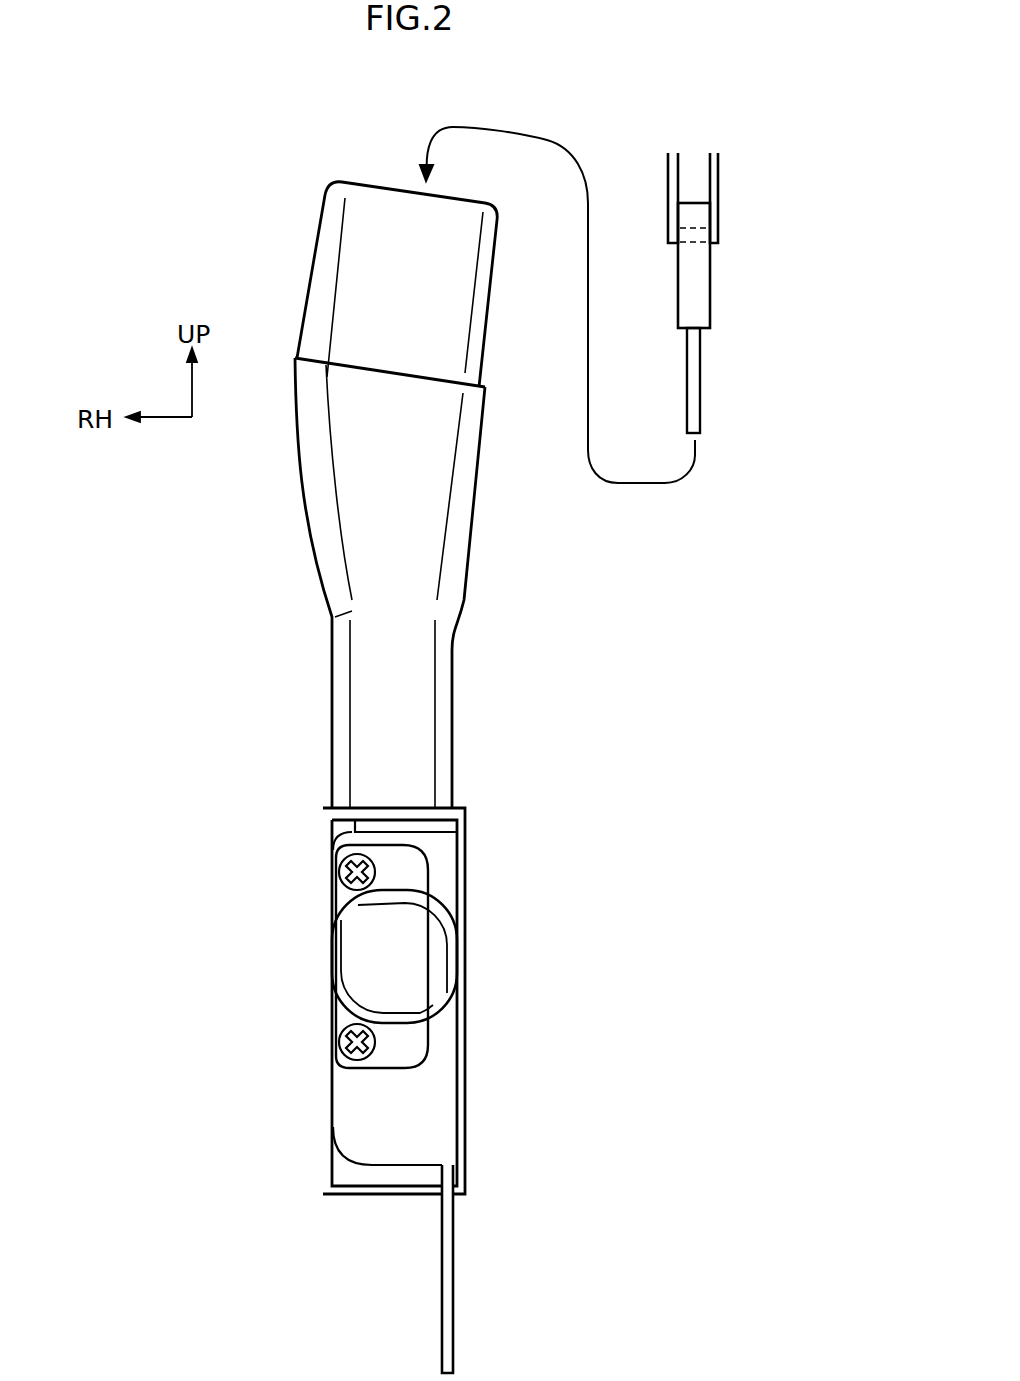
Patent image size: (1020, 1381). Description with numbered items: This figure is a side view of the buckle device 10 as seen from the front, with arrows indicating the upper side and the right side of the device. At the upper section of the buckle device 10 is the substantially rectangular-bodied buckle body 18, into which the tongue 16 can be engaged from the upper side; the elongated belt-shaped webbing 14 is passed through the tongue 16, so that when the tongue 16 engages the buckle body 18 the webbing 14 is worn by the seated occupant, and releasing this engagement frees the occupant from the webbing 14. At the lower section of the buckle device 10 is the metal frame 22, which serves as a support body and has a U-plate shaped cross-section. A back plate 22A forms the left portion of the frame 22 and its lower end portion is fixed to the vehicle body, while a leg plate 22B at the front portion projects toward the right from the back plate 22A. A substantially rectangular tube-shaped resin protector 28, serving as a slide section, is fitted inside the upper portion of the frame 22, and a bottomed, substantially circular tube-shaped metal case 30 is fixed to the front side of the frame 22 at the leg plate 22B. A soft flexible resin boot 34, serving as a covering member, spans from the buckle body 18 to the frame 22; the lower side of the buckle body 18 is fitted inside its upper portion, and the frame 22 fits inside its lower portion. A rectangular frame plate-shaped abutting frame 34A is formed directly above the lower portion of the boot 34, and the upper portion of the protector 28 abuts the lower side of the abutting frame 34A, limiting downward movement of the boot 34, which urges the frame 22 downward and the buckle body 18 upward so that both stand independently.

The buckle device 10 is at (219, 233).
The webbing 14 is at (720, 167).
The tongue 16 is at (712, 298).
The buckle body 18 is at (310, 275).
The frame 22 is at (457, 850).
The back plate 22A is at (440, 1287).
The leg plate 22B is at (430, 1085).
The protector 28 is at (437, 820).
The case 30 is at (447, 898).
The boot 34 is at (300, 520).
The abutting frame 34A is at (345, 808).